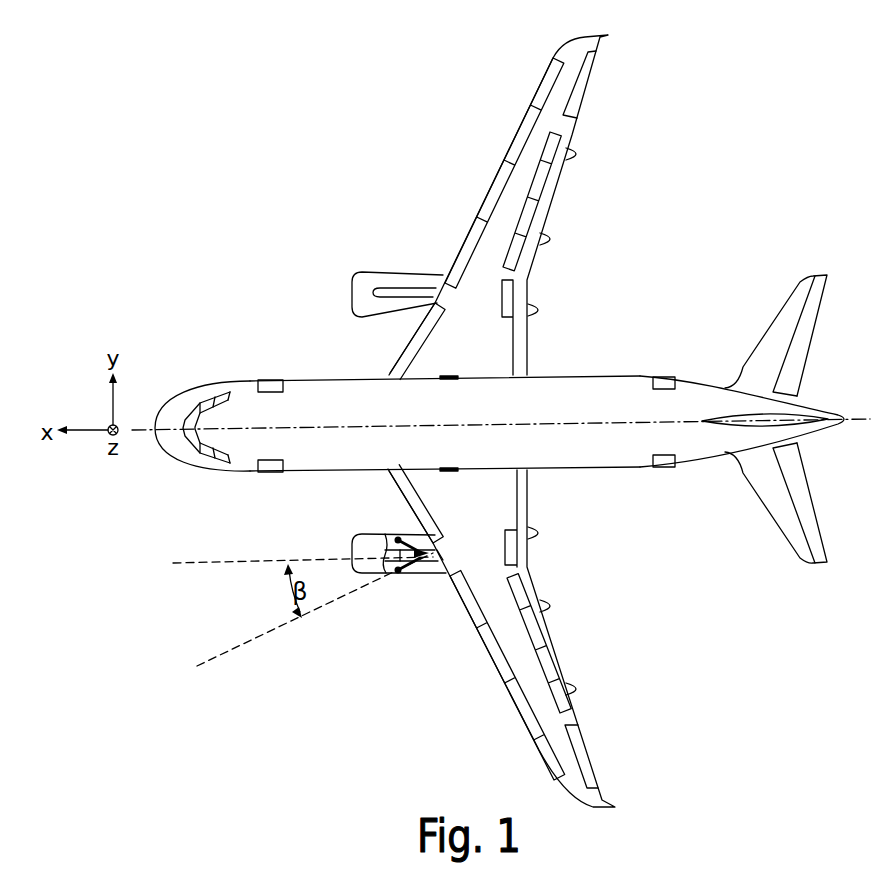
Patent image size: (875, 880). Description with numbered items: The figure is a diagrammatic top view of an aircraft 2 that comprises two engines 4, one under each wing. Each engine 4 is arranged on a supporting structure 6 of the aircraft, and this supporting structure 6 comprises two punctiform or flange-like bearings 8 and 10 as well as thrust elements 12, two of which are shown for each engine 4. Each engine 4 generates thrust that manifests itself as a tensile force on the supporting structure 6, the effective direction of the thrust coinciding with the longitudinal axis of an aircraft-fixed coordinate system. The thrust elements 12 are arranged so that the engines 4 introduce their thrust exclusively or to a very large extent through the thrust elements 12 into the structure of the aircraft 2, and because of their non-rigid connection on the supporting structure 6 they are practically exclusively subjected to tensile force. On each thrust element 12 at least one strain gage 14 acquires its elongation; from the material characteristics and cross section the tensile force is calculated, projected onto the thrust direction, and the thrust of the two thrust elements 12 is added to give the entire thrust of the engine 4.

The aircraft 2 is at (391, 106).
The engine 4 is at (362, 283).
The supporting structure 6 is at (437, 548).
The bearing 8 is at (387, 575).
The bearing 10 is at (433, 547).
The thrust element 12 is at (388, 536).
The strain gage 14 is at (398, 539).